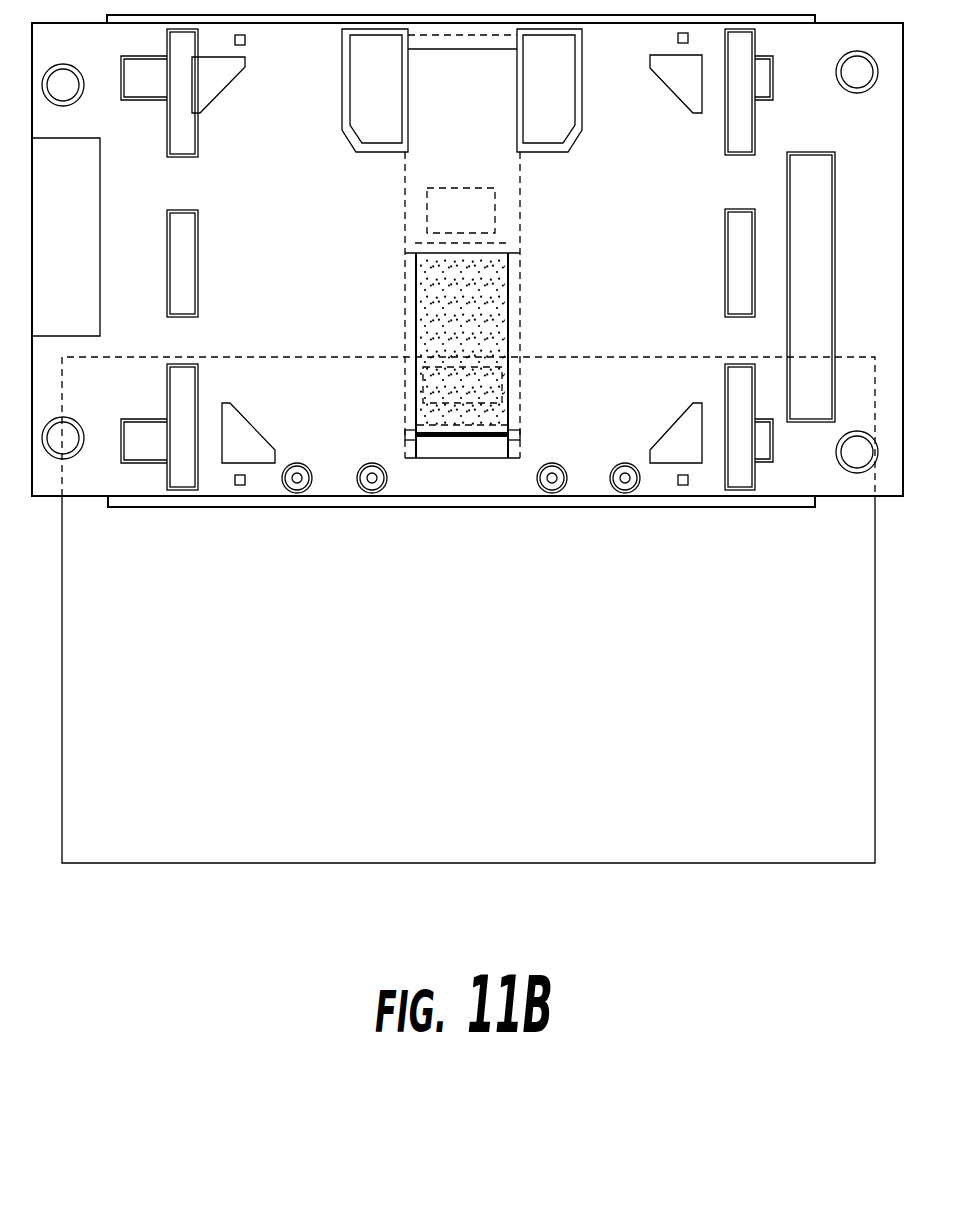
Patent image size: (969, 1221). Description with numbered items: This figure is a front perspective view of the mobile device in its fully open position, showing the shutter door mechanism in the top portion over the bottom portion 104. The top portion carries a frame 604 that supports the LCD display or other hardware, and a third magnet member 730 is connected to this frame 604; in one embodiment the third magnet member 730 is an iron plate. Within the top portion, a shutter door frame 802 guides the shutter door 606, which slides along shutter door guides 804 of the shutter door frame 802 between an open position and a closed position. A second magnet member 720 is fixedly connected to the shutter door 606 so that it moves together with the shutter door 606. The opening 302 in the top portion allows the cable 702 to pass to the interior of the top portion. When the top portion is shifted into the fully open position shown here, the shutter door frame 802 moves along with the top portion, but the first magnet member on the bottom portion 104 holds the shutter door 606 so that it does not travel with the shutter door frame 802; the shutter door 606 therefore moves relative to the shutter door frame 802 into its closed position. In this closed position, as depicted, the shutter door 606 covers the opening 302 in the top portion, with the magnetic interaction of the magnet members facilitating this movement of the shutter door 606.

The bottom portion 104 is at (499, 617).
The frame 604 is at (295, 185).
The shutter door frame 802 is at (398, 263).
The third magnet member 730 is at (494, 212).
The shutter door guides 804 is at (418, 302).
The shutter door 606 is at (478, 299).
The second magnet member 720 is at (482, 392).
The cable 702 is at (487, 438).
The opening 302 is at (450, 450).